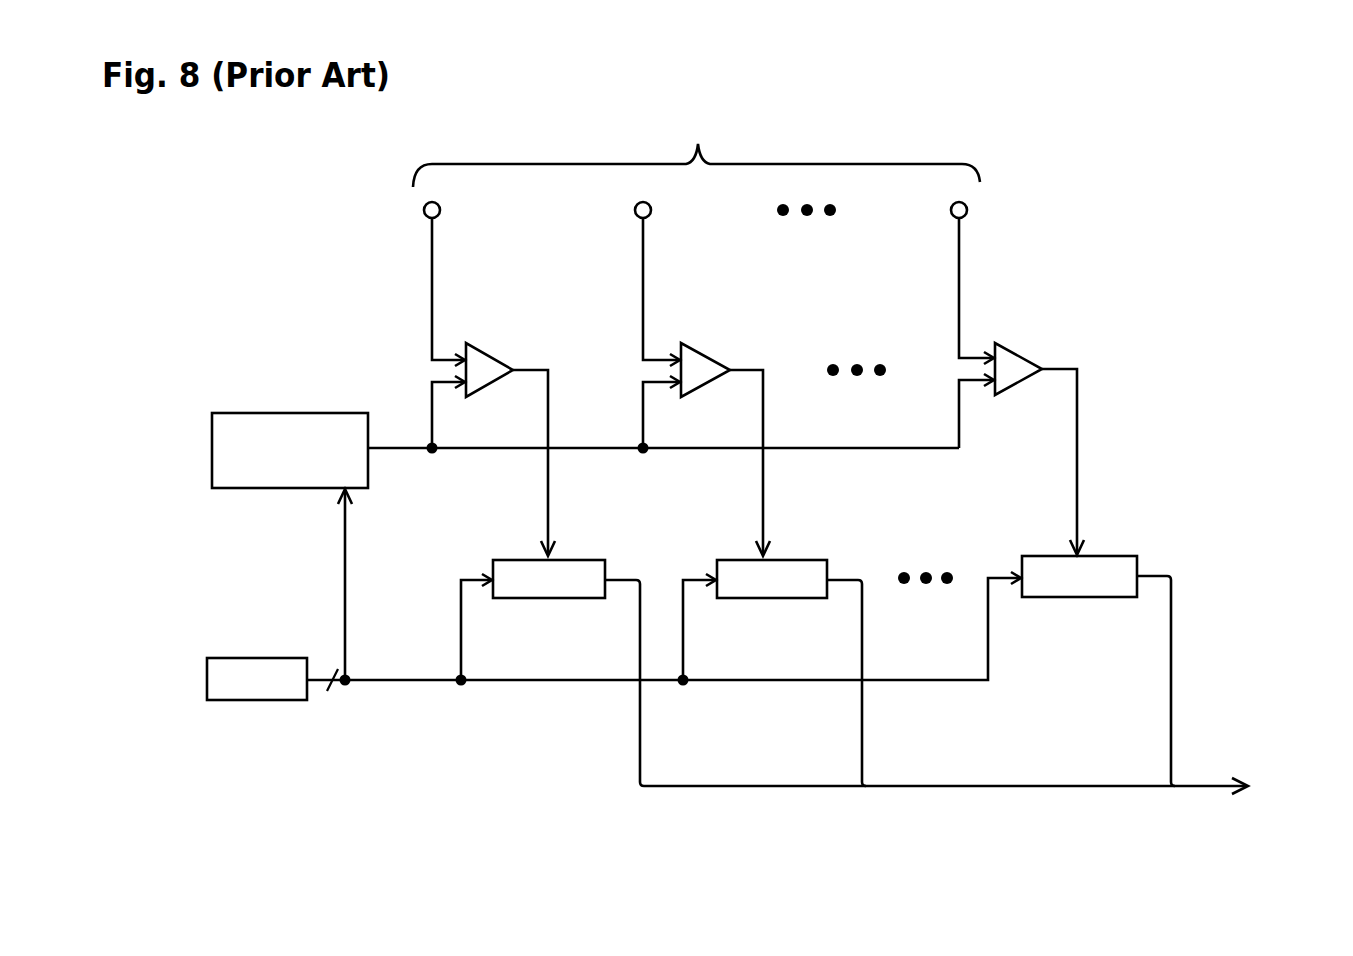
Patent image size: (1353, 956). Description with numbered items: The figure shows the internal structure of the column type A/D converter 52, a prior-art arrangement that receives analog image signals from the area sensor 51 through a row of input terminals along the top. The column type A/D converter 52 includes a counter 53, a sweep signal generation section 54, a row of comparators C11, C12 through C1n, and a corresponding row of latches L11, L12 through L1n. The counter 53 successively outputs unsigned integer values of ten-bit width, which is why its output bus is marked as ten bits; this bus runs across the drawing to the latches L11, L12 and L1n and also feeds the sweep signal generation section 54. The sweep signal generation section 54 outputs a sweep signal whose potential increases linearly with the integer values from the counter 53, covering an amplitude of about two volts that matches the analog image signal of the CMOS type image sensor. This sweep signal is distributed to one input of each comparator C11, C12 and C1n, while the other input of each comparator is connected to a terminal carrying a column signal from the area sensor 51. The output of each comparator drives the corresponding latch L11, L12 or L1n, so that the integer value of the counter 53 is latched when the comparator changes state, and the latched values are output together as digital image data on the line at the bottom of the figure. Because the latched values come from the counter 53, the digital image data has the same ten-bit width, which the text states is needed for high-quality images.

The area sensor 51 is at (696, 152).
The column type A/D converter 52 is at (1238, 151).
The counter 53 is at (306, 653).
The sweep signal generation section 54 is at (368, 404).
The comparator C11 is at (516, 347).
The comparator C12 is at (728, 347).
The comparator C1n is at (1040, 347).
The latch L11 is at (606, 551).
The latch L12 is at (829, 551).
The latch L1n is at (1139, 548).